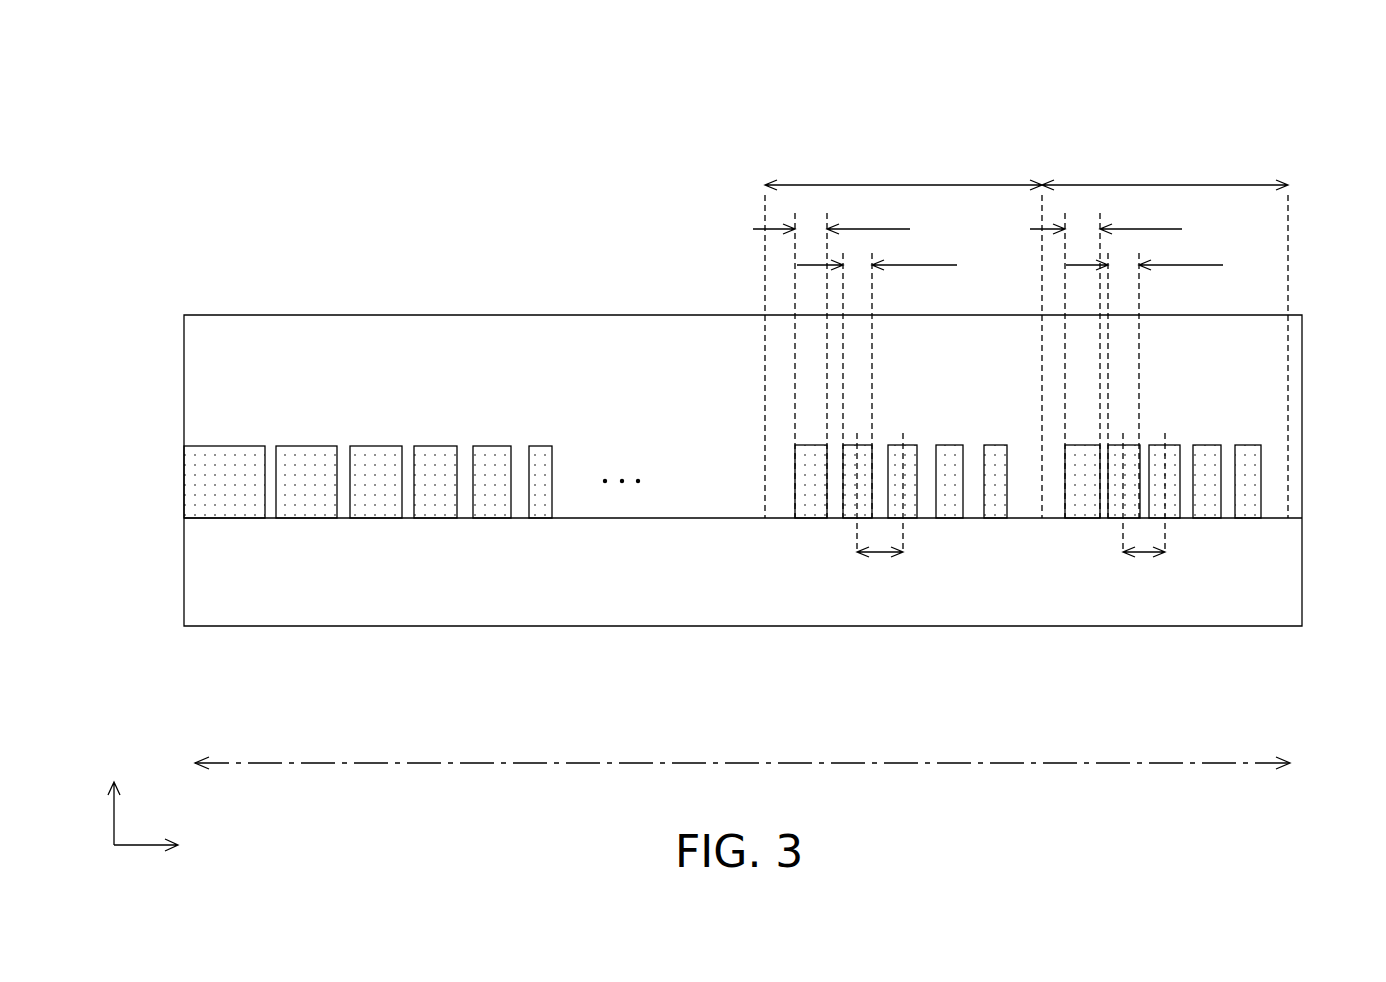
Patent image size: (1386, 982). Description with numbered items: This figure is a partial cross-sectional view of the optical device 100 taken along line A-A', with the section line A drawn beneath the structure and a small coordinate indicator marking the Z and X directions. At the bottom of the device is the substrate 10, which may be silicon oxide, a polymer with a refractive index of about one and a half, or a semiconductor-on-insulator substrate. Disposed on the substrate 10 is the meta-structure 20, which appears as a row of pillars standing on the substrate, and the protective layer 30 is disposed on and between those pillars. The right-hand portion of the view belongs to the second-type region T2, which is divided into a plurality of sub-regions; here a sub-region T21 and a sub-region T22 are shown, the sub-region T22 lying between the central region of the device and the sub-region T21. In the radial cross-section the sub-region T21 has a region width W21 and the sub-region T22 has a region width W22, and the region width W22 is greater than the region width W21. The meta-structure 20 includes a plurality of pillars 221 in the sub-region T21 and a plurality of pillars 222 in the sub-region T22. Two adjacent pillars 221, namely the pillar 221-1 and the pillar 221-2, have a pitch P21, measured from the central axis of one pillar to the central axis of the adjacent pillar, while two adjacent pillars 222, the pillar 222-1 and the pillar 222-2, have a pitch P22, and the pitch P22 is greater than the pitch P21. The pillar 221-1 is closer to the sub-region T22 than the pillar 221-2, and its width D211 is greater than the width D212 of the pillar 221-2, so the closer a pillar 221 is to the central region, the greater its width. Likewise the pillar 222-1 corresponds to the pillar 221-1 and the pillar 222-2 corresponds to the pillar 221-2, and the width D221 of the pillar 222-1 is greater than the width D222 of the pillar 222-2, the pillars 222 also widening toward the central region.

The optical device 100 is at (230, 55).
The substrate 10 is at (207, 576).
The meta-structure 20 is at (1307, 446).
The protective layer 30 is at (207, 378).
The pillars 221 is at (1120, 596).
The pillar 221-1 is at (1072, 503).
The pillar 221-2 is at (1115, 503).
The pillars 222 is at (858, 596).
The pillar 222-1 is at (803, 503).
The pillar 222-2 is at (850, 503).
The second-type region T2 is at (197, 143).
The sub-region T21 is at (1042, 140).
The sub-region T22 is at (1042, 140).
The region width W21 is at (1165, 173).
The region width W22 is at (903, 173).
The width D211 is at (1106, 362).
The width D212 is at (1144, 380).
The width D221 is at (831, 362).
The width D222 is at (877, 380).
The pitch P21 is at (1144, 552).
The pitch P22 is at (880, 552).
The line A-A' A is at (746, 765).
The Z axis Z is at (112, 800).
The X axis X is at (156, 847).